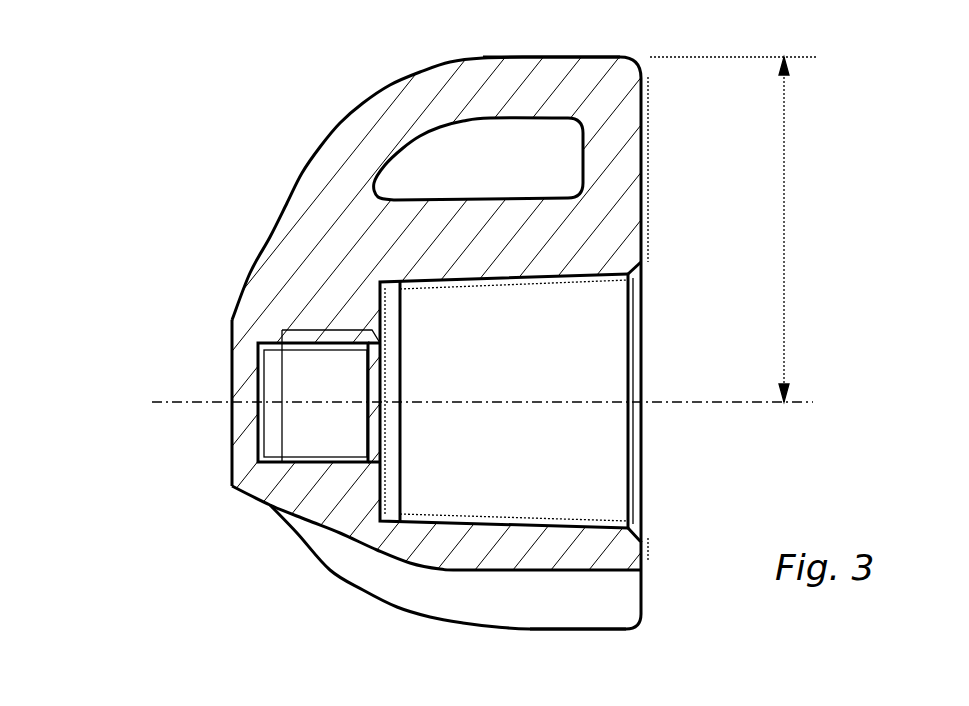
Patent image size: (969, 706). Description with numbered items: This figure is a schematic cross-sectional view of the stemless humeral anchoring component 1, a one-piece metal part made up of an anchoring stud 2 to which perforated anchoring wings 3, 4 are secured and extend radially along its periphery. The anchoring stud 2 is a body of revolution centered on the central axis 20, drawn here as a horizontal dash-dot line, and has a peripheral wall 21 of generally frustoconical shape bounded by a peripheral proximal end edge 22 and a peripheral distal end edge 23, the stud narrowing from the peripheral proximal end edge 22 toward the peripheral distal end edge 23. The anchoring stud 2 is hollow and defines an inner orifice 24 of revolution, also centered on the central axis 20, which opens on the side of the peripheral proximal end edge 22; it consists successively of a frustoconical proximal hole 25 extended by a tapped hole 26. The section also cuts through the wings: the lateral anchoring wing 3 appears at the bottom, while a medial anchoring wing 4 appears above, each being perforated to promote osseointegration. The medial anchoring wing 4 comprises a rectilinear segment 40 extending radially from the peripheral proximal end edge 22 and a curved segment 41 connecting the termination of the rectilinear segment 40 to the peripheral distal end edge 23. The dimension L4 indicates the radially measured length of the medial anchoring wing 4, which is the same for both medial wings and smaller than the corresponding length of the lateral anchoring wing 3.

The stemless humeral anchoring component 1 is at (178, 176).
The anchoring stud 2 is at (358, 552).
The lateral anchoring wing 3 is at (540, 632).
The medial anchoring wing 4 is at (445, 60).
The central axis 20 is at (165, 400).
The peripheral wall 21 is at (462, 560).
The peripheral proximal end edge 22 is at (644, 566).
The peripheral distal end edge 23 is at (228, 465).
The inner orifice 24 is at (603, 447).
The frustoconical proximal hole 25 is at (612, 423).
The tapped hole 26 is at (252, 362).
The rectilinear segment 40 is at (622, 145).
The curved segment 41 is at (556, 56).
The radially measured length of the medial anchoring wing L4 is at (737, 229).